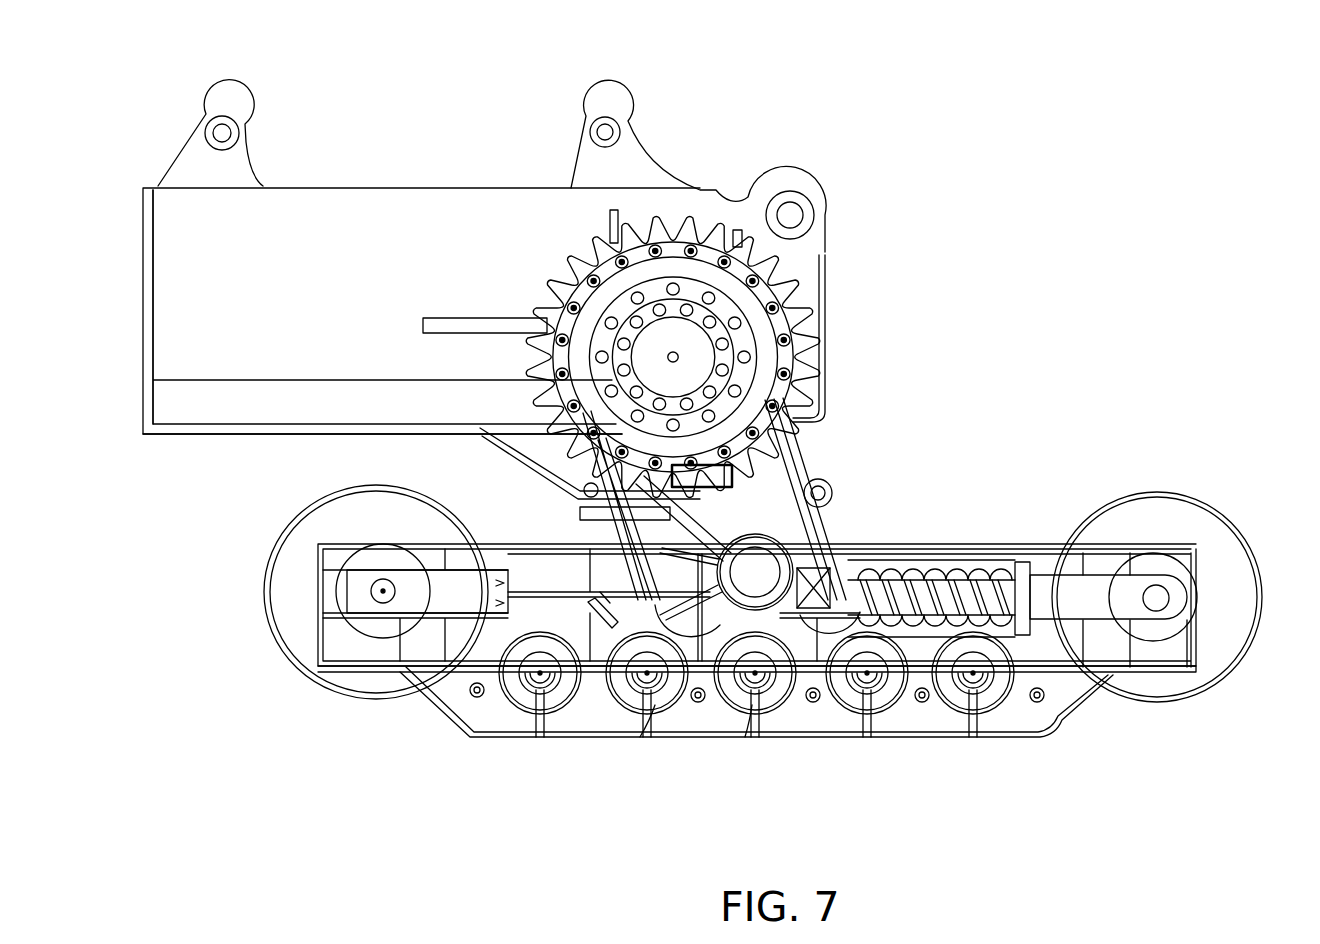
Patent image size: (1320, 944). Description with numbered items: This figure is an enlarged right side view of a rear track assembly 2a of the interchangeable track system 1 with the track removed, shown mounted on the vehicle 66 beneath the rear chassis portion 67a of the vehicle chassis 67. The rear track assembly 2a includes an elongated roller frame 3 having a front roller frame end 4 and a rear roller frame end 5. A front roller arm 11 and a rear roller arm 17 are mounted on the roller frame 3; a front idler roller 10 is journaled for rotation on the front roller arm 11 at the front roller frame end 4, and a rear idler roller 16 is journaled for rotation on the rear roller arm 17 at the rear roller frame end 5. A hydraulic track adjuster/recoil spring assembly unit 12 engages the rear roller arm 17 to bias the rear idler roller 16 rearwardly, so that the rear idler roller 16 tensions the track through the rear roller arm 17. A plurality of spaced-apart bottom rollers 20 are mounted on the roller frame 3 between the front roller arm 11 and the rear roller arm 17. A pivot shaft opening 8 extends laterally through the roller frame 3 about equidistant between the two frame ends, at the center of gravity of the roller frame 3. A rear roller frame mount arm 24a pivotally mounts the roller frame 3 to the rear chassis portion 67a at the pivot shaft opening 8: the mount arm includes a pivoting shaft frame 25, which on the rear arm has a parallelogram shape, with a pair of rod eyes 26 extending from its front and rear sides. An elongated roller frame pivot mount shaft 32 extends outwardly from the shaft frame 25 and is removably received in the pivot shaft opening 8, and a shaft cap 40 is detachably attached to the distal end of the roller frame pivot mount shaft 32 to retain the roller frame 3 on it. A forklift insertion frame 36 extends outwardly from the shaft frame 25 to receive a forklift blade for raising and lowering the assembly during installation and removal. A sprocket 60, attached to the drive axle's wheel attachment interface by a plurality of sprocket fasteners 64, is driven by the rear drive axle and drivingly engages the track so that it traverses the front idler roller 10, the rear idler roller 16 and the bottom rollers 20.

The interchangeable track system 1 is at (1200, 326).
The rear track assembly 2a is at (375, 758).
The roller frame 3 is at (958, 545).
The front roller frame end 4 is at (325, 616).
The rear roller frame end 5 is at (1197, 640).
The pivot shaft opening 8 is at (755, 562).
The front idler roller 10 is at (272, 527).
The front roller arm 11 is at (470, 582).
The hydraulic track adjuster/recoil spring assembly unit 12 is at (830, 565).
The rear idler roller 16 is at (1147, 490).
The rear roller arm 17 is at (1060, 592).
The bottom rollers 20 is at (930, 738).
The rear roller frame mount arm 24a is at (808, 457).
The shaft frame 25 is at (606, 531).
The rod eyes 26 is at (838, 483).
The roller frame pivot mount shaft 32 is at (785, 702).
The forklift insertion frame 36 is at (800, 408).
The shaft cap 40 is at (690, 702).
The sprocket 60 is at (546, 300).
The sprocket fasteners 64 is at (612, 300).
The vehicle 66 is at (484, 220).
The vehicle chassis 67 is at (358, 186).
The rear chassis portion 67a is at (430, 212).